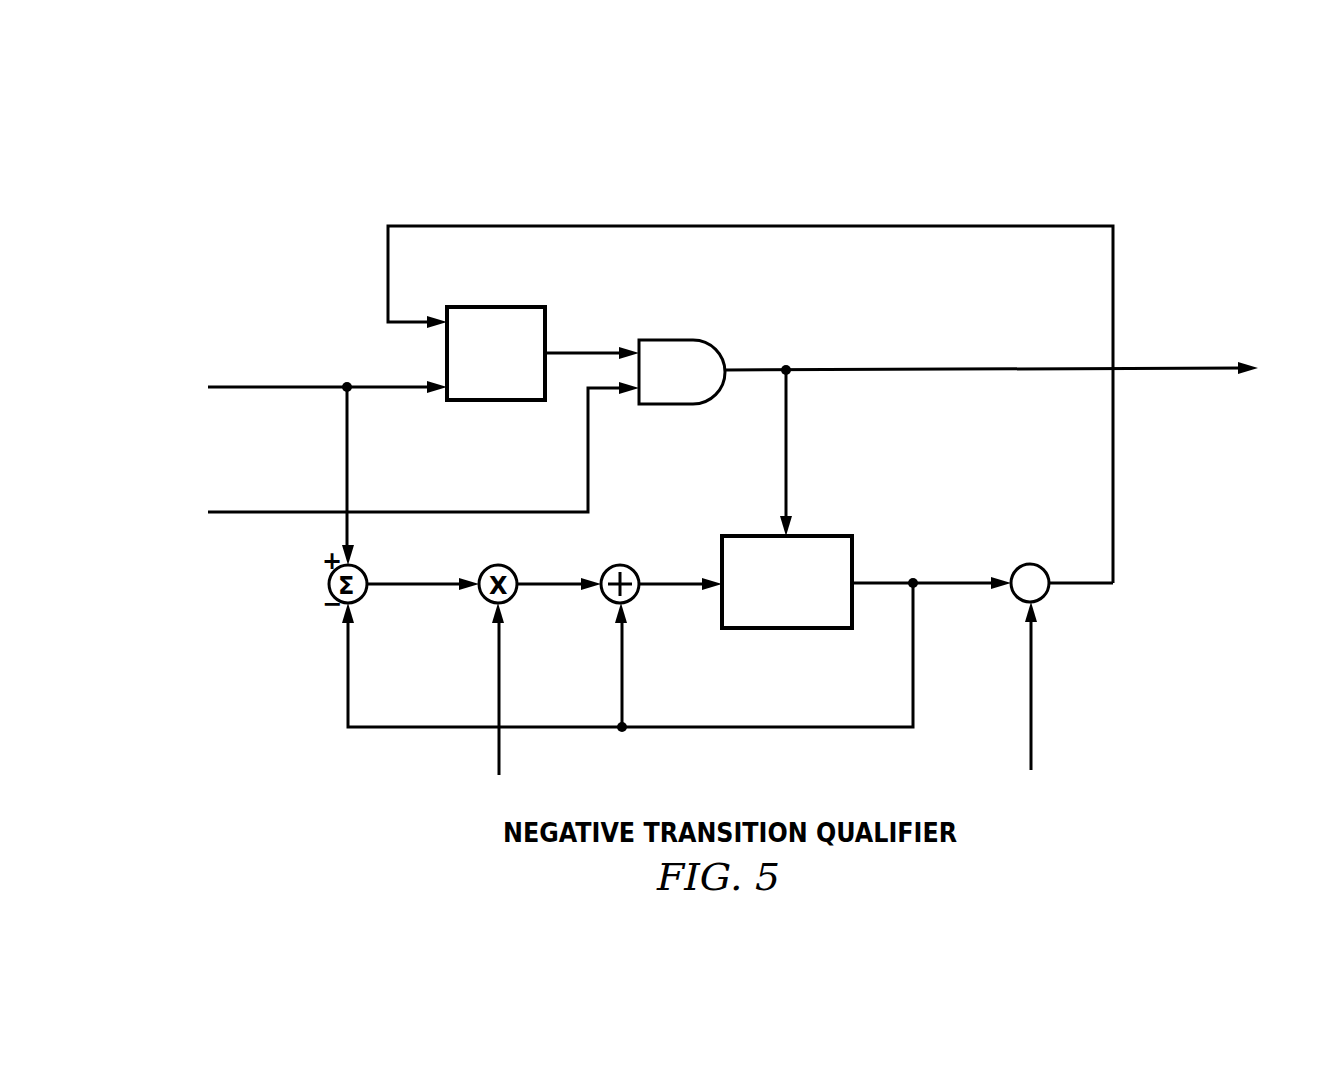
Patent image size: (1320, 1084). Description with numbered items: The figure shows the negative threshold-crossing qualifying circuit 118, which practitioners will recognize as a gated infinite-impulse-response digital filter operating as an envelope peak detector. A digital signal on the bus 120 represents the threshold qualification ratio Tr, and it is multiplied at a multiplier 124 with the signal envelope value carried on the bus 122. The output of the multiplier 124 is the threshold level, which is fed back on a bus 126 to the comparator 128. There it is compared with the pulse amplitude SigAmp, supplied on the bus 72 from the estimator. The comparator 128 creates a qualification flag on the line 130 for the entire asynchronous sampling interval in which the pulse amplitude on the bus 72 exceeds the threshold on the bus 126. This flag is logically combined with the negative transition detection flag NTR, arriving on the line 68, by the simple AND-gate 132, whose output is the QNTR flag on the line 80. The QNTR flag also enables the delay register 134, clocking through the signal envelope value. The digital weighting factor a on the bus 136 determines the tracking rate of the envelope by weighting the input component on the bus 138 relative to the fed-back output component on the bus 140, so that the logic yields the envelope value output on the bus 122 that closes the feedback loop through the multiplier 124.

The negative threshold-crossing qualifying circuit 118 is at (798, 178).
The bus 126 is at (1053, 226).
The comparator 128 is at (492, 306).
The line 130 is at (578, 352).
The AND-gate 132 is at (712, 345).
The delay register 134 is at (852, 553).
The bus 136 is at (500, 753).
The bus 138 is at (405, 583).
The bus 140 is at (623, 675).
The bus 120 is at (1032, 683).
The bus 122 is at (945, 582).
The multiplier 124 is at (1044, 598).
The bus 72 is at (268, 388).
The line 68 is at (248, 513).
The line 80 is at (1175, 369).